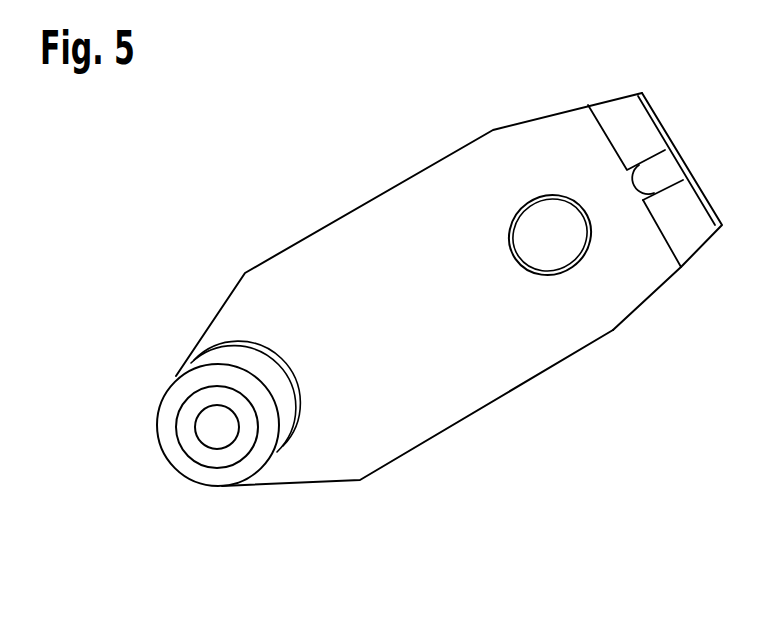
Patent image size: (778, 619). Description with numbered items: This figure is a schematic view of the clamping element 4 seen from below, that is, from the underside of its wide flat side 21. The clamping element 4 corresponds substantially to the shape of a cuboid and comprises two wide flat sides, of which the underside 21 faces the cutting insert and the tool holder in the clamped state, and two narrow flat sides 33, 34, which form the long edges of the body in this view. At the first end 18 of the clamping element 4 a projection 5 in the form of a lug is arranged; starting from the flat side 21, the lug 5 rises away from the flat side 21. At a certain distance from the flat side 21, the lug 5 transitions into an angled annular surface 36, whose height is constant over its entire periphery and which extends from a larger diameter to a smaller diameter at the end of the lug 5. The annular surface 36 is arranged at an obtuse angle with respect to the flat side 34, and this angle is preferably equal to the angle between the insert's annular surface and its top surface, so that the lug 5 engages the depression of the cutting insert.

The clamping element 4 is at (386, 133).
The projection 5 is at (223, 507).
The first end 18 is at (166, 477).
The wide flat side 21 is at (402, 346).
The narrow flat side 33 is at (322, 230).
The narrow flat side 34 is at (463, 423).
The annular surface 36 is at (168, 418).